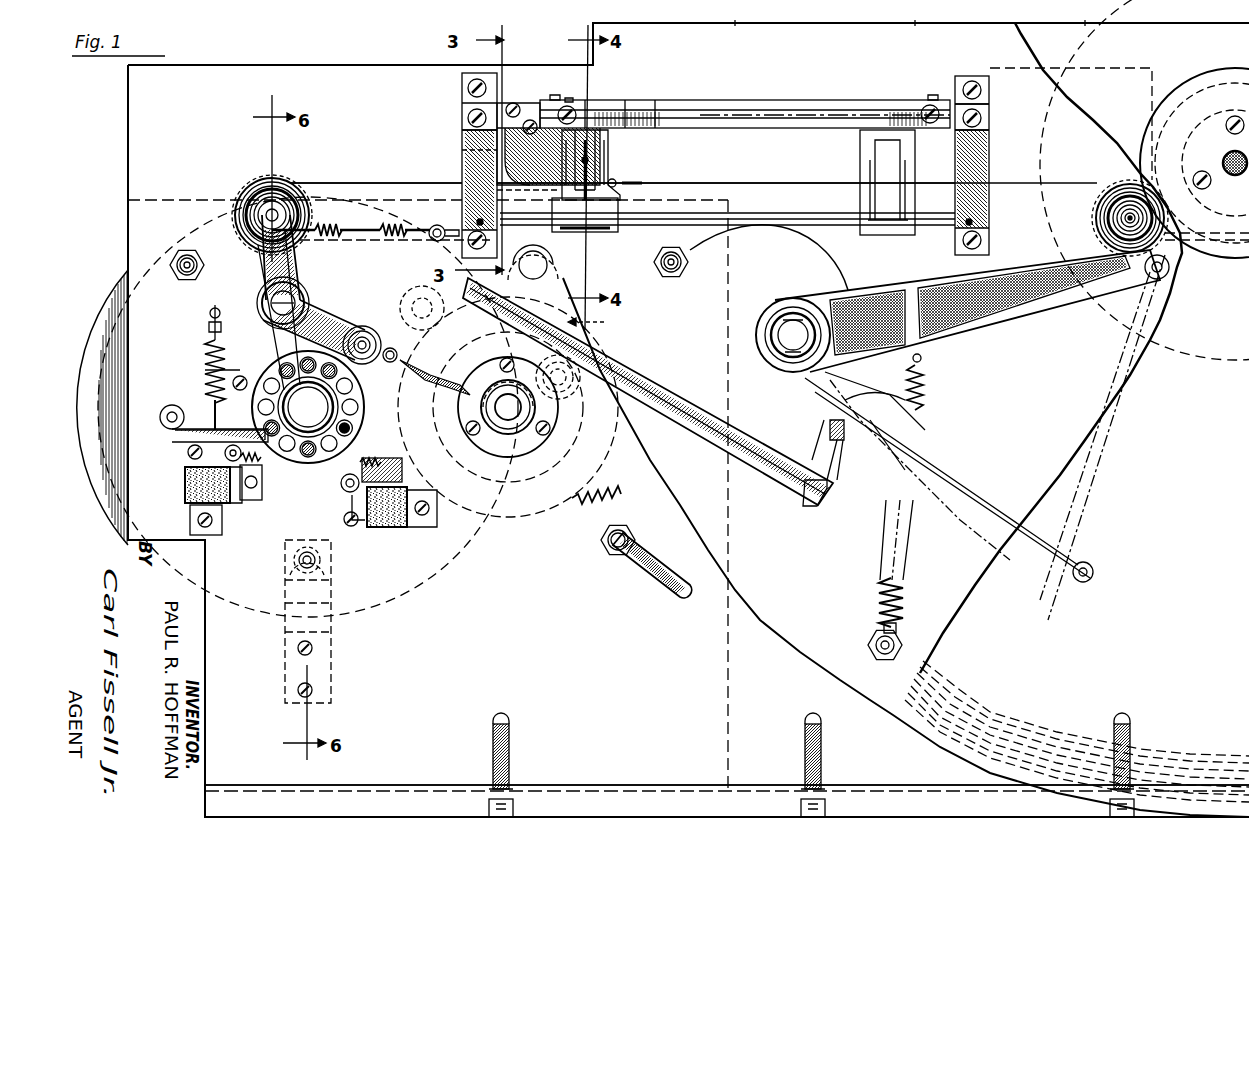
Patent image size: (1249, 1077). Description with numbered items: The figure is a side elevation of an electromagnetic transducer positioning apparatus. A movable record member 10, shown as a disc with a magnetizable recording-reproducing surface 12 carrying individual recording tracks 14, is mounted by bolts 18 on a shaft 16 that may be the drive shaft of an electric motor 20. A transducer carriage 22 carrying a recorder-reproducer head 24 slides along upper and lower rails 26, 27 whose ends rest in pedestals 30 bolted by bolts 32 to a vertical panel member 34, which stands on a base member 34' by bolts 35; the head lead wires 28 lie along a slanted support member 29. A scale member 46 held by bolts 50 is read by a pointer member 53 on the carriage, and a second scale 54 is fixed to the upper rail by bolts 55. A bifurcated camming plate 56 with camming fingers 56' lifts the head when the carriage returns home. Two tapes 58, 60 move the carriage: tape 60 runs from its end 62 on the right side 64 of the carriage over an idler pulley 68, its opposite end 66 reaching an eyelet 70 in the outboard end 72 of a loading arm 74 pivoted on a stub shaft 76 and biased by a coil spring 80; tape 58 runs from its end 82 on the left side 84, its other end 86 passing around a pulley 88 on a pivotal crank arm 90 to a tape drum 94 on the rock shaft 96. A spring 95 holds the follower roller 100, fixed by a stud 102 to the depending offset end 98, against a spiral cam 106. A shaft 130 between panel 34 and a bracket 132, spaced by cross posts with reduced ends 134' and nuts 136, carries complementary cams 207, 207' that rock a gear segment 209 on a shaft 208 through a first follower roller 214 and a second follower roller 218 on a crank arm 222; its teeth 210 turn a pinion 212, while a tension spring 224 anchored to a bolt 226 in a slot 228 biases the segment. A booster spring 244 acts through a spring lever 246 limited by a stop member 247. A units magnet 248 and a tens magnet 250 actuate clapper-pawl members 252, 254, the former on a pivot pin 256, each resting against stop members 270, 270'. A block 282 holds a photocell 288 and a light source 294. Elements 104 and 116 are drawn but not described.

The movable record member 10 is at (1074, 428).
The magnetizable recording-reproducing surface 12 is at (920, 735).
The recording tracks 14 is at (1180, 760).
The shaft or spindle 16 is at (1237, 176).
The bolts 18 is at (1226, 130).
The electric motor 20 is at (1214, 358).
The transducer carriage 22 is at (605, 158).
The electromagnetic recorder-reproducer head 24 is at (596, 150).
The upper guide member or rail 26 is at (988, 120).
The lower guide member or rail 27 is at (775, 221).
The electrical input-output lead wires 28 is at (818, 290).
The slanted support member 29 is at (690, 440).
The standoff blocks or pedestals 30 is at (464, 148).
The bolts 32 is at (462, 88).
The panel member 34 is at (569, 660).
The base member 34' is at (727, 768).
The bolts 35 is at (498, 718).
The scale member 46 is at (812, 106).
The bolts 50 is at (553, 94).
The pointer member 53 is at (590, 98).
The second scale 54 is at (722, 118).
The bolts 55 is at (560, 108).
The bifurcated camming plate 56 is at (512, 144).
The camming fingers 56' is at (566, 84).
The tape 58 is at (371, 183).
The tape 60 is at (775, 185).
The end of tape 62 is at (632, 183).
The right side of carriage 64 is at (620, 198).
The opposite end of tape 66 is at (1103, 183).
The idler pulley or sheave 68 is at (1098, 222).
The eyelet 70 is at (1163, 278).
The outboard end of loading arm 72 is at (1095, 436).
The loading arm 74 is at (1020, 320).
The stub shaft 76 is at (792, 320).
The coil spring 80 is at (925, 398).
The end of tape 82 is at (470, 162).
The left side of carriage 84 is at (550, 193).
The other end of tape 86 is at (204, 374).
The pulley or sheave 88 is at (262, 186).
The pivotal crank arm 90 is at (300, 262).
The tape drum 94 is at (298, 356).
The spring 95 is at (400, 228).
The rock shaft 96 is at (352, 432).
The depending offset end of lever 98 is at (305, 330).
The follower roller 100 is at (380, 328).
The stud 102 is at (390, 349).
The pawl spring 104 is at (425, 372).
The spiral cam 106 is at (352, 332).
The disc hub 116 is at (338, 385).
The shaft 130 is at (546, 430).
The secondary supporting panel or bracket 132 is at (724, 707).
The reduced end portions 134' is at (417, 263).
The nuts 136 is at (182, 283).
The complementary cam 207 is at (508, 407).
The complementary cam 207' is at (508, 412).
The shaft 208 is at (548, 258).
The gear segment or sector 209 is at (388, 248).
The peripheral teeth 210 is at (258, 282).
The pinion 212 is at (358, 408).
The first follower roller 214 is at (412, 290).
The second follower roller 218 is at (582, 392).
The crank arm 222 is at (605, 322).
The tension spring 224 is at (592, 505).
The bolt 226 is at (606, 552).
The slot 228 is at (648, 578).
The booster spring 244 is at (204, 354).
The spring lever 246 is at (176, 432).
The stop member 247 is at (232, 388).
The units magnet 248 is at (185, 495).
The tens magnet 250 is at (398, 528).
The clapper-pawl member 252 is at (262, 462).
The clapper-pawl member 254 is at (350, 493).
The pivot pin 256 is at (252, 500).
The stop member 270 is at (297, 407).
The stop member 270' is at (350, 534).
The block 282 is at (333, 680).
The photocell 288 is at (326, 575).
The light source 294 is at (292, 562).